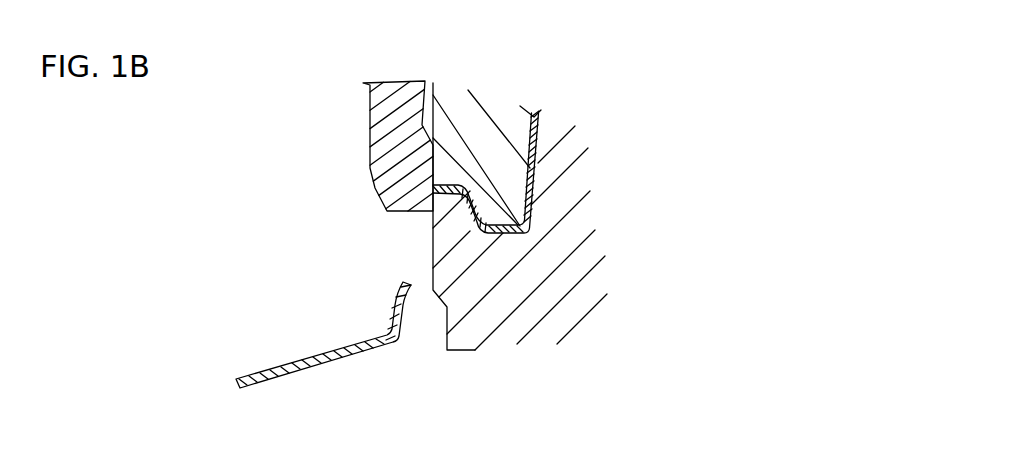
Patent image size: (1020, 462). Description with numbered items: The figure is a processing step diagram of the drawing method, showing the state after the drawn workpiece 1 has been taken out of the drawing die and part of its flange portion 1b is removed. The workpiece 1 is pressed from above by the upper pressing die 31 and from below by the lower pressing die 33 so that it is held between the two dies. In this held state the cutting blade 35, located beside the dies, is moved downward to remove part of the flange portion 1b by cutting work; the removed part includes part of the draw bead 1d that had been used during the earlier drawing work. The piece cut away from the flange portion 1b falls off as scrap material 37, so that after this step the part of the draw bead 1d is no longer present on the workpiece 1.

The workpiece 1 is at (561, 167).
The draw bead 1d is at (561, 169).
The flange portion 1b is at (445, 185).
The upper pressing die 31 is at (497, 112).
The lower pressing die 33 is at (485, 315).
The cutting blade 35 is at (371, 129).
The scrap material 37 is at (290, 360).